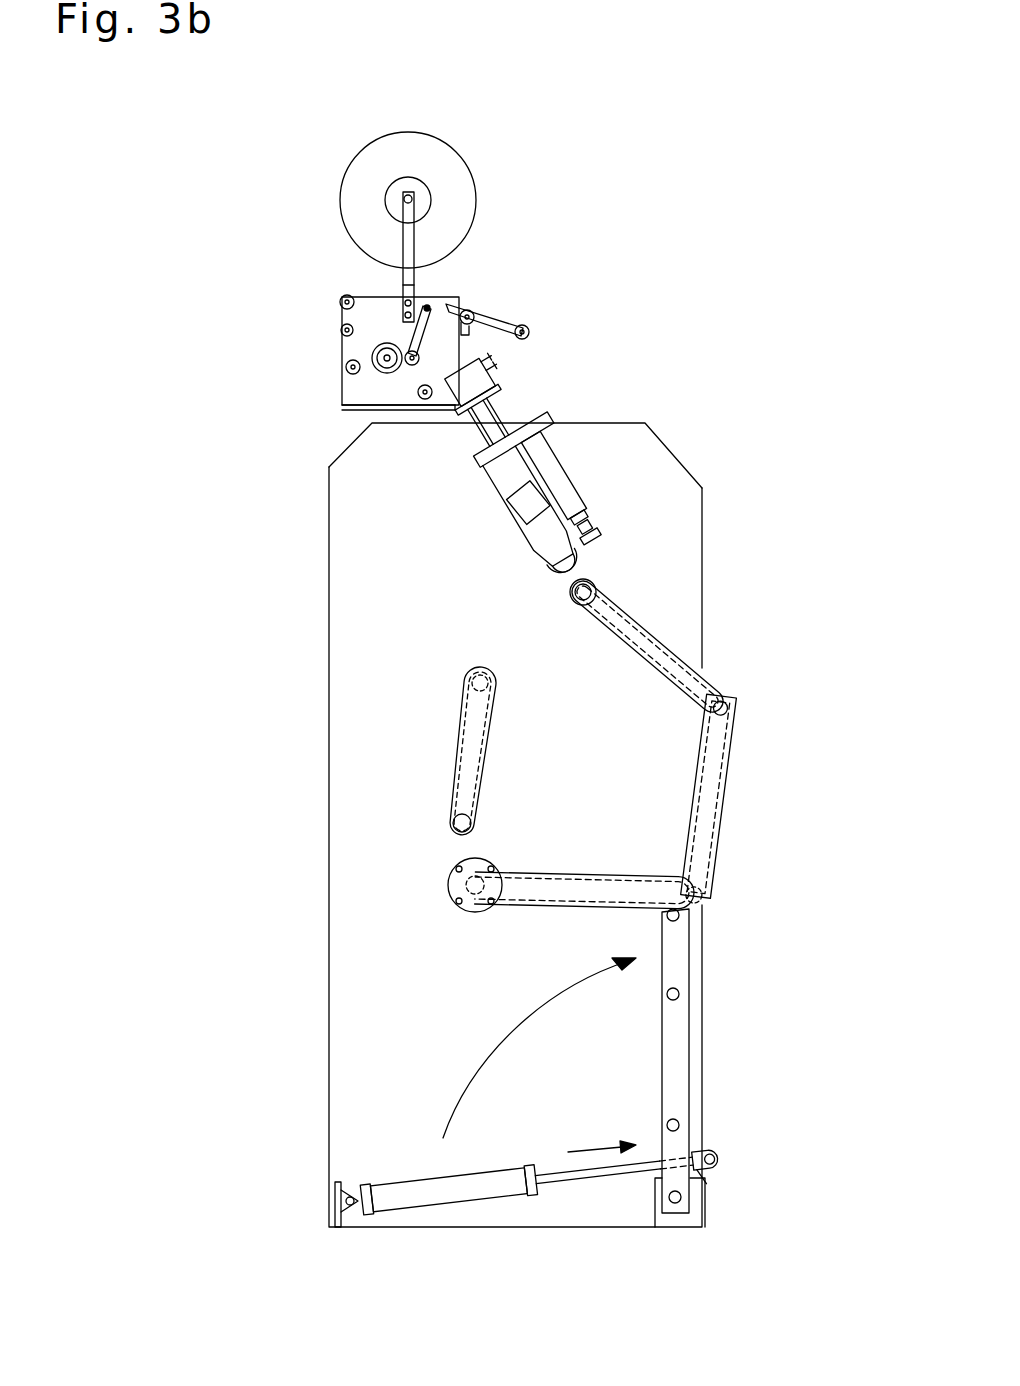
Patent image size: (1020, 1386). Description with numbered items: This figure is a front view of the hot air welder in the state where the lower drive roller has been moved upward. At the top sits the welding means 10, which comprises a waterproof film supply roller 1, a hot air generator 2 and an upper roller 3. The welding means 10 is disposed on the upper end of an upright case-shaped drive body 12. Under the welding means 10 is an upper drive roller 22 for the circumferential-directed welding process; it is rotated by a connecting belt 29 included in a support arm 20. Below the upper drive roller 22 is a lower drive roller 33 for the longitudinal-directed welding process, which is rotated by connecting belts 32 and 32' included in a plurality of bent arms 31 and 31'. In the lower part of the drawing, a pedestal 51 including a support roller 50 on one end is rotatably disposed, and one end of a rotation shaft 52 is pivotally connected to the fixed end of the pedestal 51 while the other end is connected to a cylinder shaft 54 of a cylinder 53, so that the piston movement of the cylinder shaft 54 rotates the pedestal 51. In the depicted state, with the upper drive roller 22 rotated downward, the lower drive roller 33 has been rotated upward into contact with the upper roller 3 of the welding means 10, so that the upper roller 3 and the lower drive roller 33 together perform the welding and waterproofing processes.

The waterproof film supply roller 1 is at (458, 200).
The hot air generator 2 is at (570, 462).
The upper roller 3 is at (560, 578).
The welding means 10 is at (620, 489).
The drive body 12 is at (355, 1122).
The support arm 20 is at (463, 694).
The upper drive roller 22 is at (450, 820).
The connecting belt 29 is at (462, 746).
The bent arm 31 is at (478, 899).
The bent arm 31' is at (765, 796).
The connecting belt 32 is at (764, 797).
The connecting belt 32' is at (690, 648).
The lower drive roller 33 is at (596, 583).
The support roller 50 is at (680, 917).
The pedestal 51 is at (680, 1075).
The rotation shaft 52 is at (683, 1197).
The cylinder 53 is at (453, 1193).
The cylinder shaft 54 is at (613, 1178).